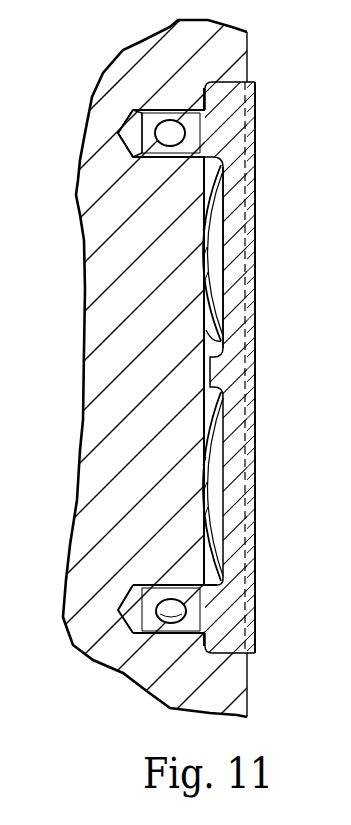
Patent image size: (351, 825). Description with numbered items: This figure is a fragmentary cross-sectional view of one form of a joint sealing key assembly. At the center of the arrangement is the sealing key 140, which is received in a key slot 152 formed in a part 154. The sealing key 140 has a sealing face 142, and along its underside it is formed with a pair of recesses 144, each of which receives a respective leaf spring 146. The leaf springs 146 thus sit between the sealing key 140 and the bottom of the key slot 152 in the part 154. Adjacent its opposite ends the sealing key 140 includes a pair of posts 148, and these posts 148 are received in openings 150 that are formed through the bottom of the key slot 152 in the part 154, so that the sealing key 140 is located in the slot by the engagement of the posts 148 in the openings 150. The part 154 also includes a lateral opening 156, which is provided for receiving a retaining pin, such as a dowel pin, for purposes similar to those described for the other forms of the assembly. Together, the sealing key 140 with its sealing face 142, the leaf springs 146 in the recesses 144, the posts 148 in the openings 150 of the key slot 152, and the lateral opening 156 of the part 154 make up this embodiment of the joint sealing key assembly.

The sealing key 140 is at (230, 371).
The sealing face 142 is at (255, 421).
The recesses 144 is at (220, 225).
The leaf springs 146 is at (210, 196).
The posts 148 is at (157, 110).
The openings 150 is at (147, 146).
The key slot 152 is at (207, 343).
The part 154 is at (113, 417).
The lateral opening 156 is at (142, 622).